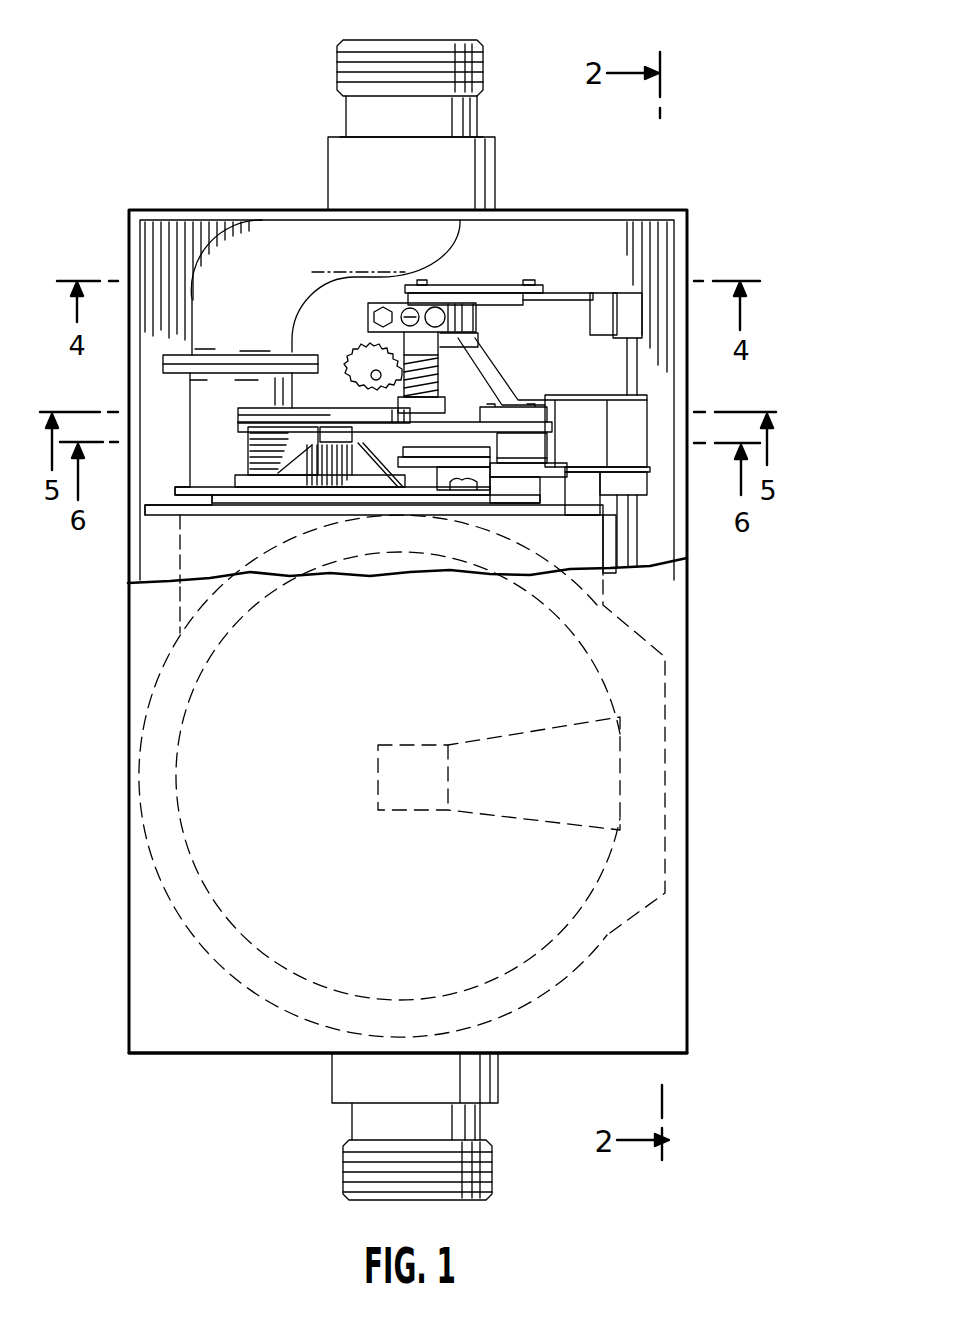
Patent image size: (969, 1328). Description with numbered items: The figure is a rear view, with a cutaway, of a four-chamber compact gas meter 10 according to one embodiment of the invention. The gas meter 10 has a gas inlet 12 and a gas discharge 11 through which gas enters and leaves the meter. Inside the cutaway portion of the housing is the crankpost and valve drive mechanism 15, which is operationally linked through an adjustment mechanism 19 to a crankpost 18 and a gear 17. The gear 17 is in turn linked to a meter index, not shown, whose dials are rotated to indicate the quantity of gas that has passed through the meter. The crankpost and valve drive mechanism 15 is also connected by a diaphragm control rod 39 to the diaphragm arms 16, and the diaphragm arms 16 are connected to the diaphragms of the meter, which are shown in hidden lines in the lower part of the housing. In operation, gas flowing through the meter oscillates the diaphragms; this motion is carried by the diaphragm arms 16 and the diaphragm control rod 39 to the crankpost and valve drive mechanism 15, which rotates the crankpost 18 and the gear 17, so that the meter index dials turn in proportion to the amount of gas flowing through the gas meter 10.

The gas meter 10 is at (188, 146).
The gas discharge 11 is at (220, 400).
The gas inlet 12 is at (332, 1080).
The crankpost and valve drive mechanism 15 is at (578, 262).
The diaphragm arms 16 is at (620, 772).
The gear 17 is at (362, 352).
The crankpost 18 is at (445, 372).
The adjustment mechanism 19 is at (462, 305).
The diaphragm control rod 39 is at (647, 538).